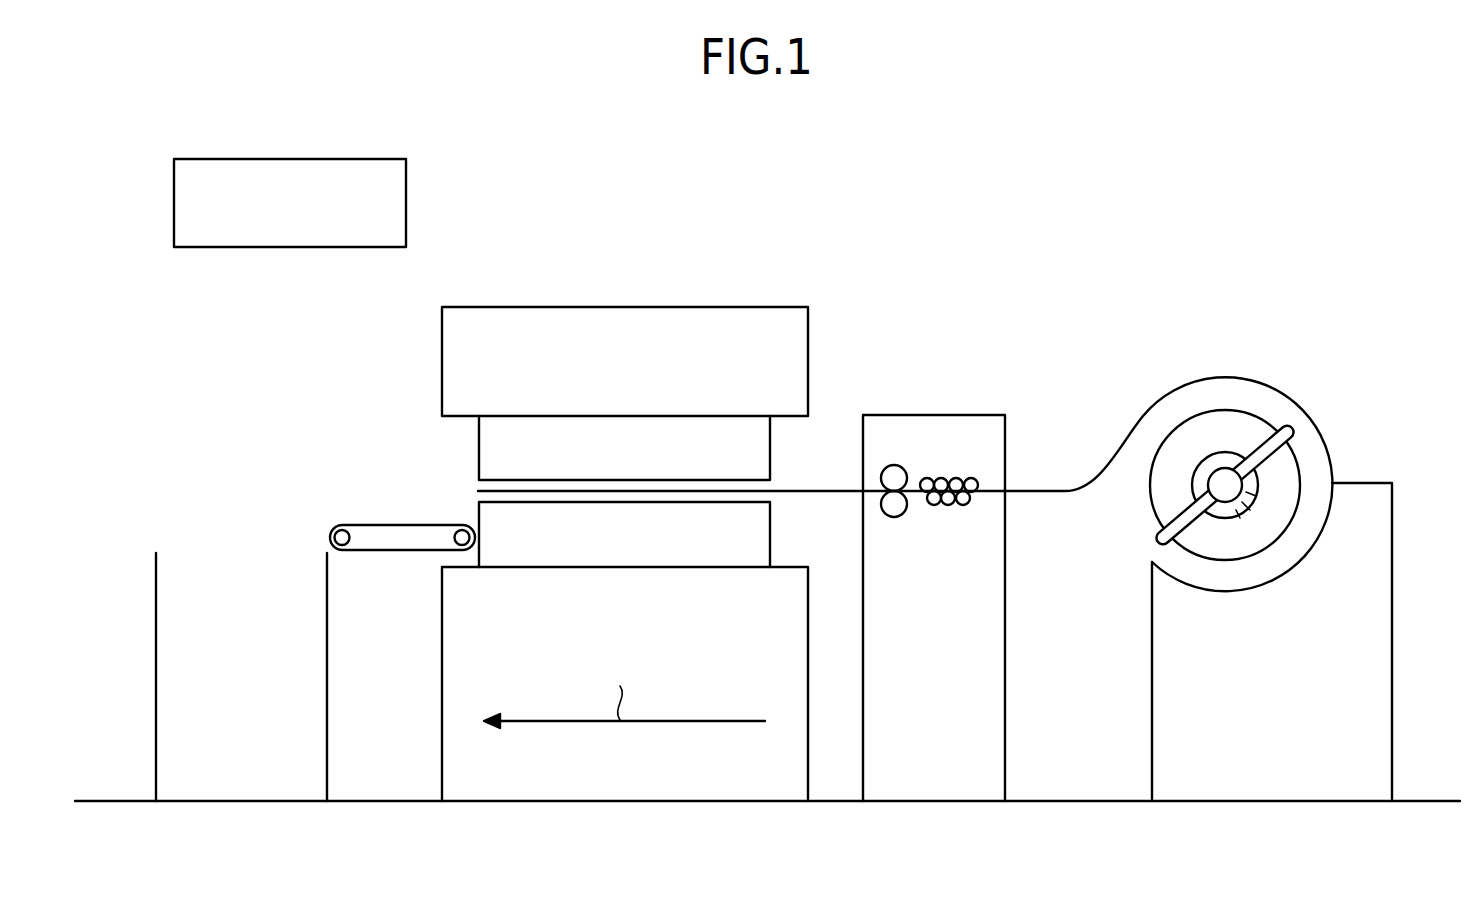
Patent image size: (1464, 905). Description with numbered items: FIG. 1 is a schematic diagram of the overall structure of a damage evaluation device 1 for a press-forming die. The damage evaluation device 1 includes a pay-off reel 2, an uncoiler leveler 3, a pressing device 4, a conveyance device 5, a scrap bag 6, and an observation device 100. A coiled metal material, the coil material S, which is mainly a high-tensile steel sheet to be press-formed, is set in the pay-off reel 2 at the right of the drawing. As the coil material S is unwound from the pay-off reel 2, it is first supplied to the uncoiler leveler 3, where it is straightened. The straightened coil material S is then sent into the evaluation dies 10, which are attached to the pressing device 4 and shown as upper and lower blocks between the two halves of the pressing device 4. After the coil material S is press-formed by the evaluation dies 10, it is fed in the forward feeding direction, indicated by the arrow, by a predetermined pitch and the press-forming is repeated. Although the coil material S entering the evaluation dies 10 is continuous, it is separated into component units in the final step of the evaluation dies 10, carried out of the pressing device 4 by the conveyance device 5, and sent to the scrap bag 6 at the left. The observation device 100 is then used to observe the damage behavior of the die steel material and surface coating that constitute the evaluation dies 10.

The damage evaluation device 1 is at (1050, 177).
The observation device 100 is at (290, 159).
The pressing device 4 is at (697, 338).
The evaluation dies 10 is at (733, 450).
The conveyance device 5 is at (405, 538).
The scrap bag 6 is at (156, 670).
The uncoiler leveler 3 is at (934, 415).
The coil material S is at (1224, 440).
The pay-off reel 2 is at (1240, 500).